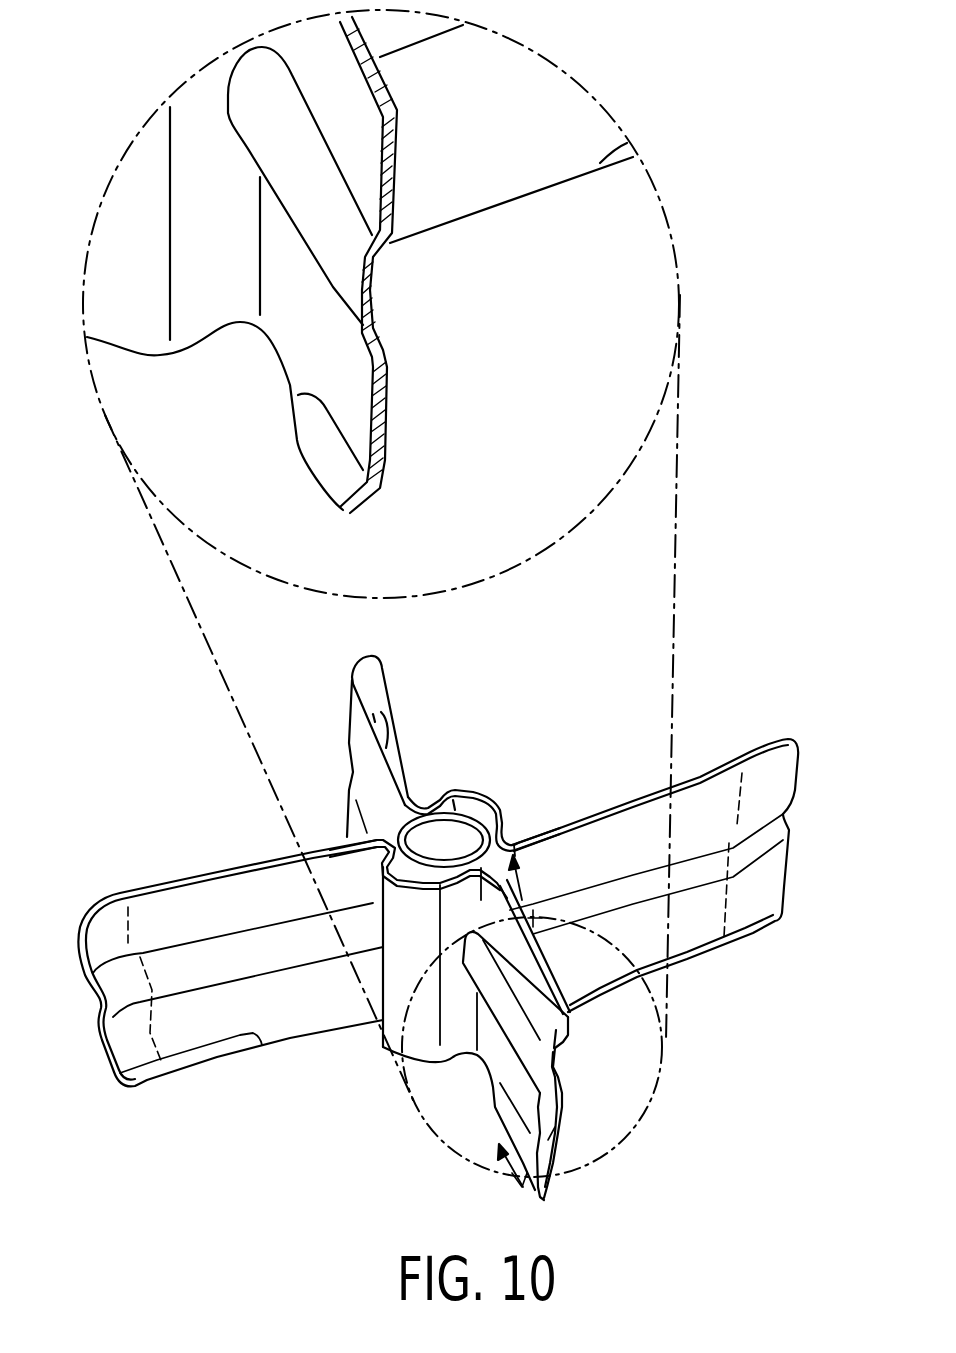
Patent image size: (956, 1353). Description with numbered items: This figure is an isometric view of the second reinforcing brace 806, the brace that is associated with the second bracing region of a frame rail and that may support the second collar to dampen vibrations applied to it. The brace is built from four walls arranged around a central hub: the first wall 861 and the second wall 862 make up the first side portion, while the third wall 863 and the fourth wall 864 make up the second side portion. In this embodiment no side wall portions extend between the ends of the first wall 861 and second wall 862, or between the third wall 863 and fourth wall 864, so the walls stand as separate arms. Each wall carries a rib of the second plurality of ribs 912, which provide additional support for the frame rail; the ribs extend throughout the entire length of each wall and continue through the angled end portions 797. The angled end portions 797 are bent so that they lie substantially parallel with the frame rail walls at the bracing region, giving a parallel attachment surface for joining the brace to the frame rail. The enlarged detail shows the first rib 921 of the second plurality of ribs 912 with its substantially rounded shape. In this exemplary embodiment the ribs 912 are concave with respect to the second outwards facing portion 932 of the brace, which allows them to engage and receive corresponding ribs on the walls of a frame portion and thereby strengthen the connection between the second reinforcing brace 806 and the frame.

The second reinforcing brace 806 is at (214, 815).
The first wall 861 is at (152, 885).
The second wall 862 is at (513, 1035).
The third wall 863 is at (747, 943).
The fourth wall 864 is at (356, 710).
The second plurality of ribs 912 is at (188, 964).
The second outwards facing portion 932 is at (693, 943).
The first rib 921 is at (385, 293).
The angled end portions 797 is at (557, 1153).